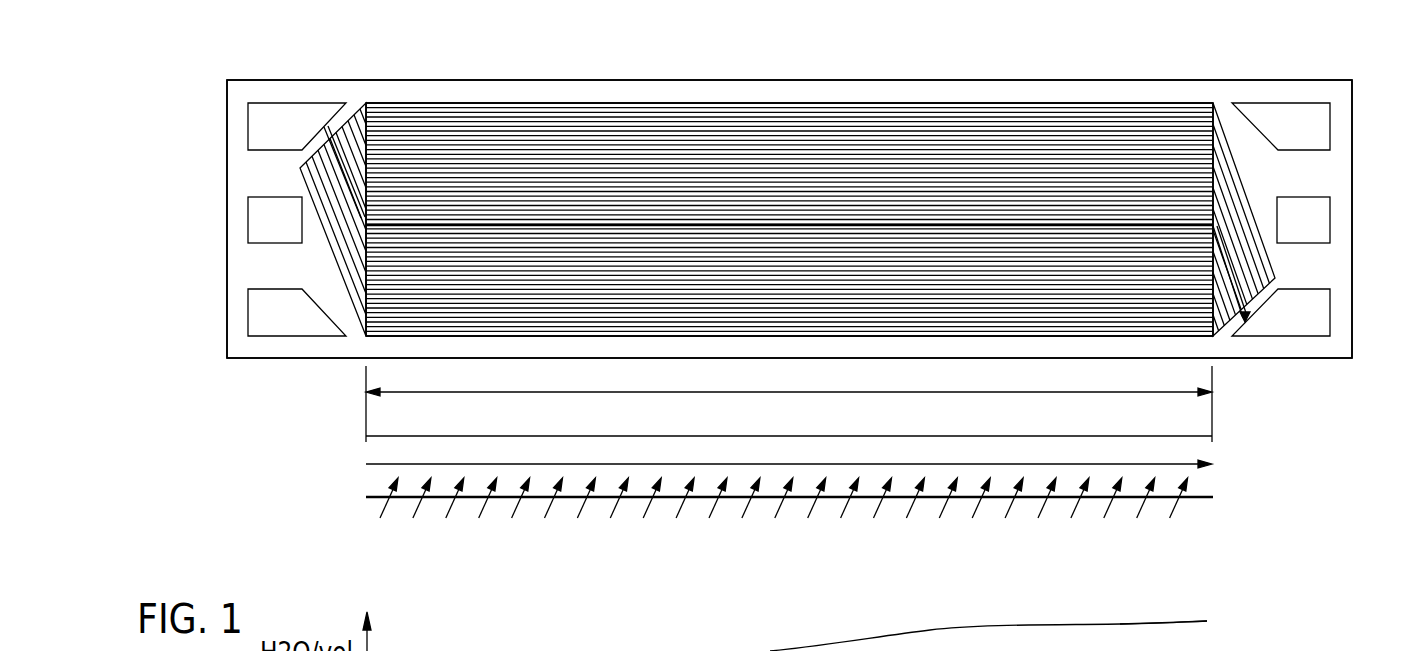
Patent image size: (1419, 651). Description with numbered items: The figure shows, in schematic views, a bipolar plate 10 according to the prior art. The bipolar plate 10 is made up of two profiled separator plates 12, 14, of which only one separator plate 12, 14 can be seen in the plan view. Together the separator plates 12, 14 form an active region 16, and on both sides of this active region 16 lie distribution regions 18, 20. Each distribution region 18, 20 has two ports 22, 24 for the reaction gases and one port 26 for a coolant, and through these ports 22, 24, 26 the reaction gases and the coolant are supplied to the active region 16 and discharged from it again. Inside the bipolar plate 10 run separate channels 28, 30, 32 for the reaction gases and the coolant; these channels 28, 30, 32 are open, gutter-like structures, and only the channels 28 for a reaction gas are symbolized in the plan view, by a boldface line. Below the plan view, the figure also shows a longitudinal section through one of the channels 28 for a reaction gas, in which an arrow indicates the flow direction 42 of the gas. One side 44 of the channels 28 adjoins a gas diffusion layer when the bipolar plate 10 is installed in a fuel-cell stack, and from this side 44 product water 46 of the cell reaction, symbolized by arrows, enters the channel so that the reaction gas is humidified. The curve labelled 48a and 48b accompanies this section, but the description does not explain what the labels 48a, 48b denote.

The bipolar plate 10 is at (877, 52).
The separator plate 12 is at (1150, 81).
The separator plate 14 is at (1150, 81).
The active region 16 is at (538, 82).
The distribution region 18 is at (300, 92).
The distribution region 20 is at (1283, 90).
The port for reaction gas 22 is at (266, 127).
The port for reaction gas 24 is at (266, 313).
The port for coolant 26 is at (266, 221).
The channel for reaction gas 28 is at (990, 232).
The channel 30 is at (722, 104).
The channel 32 is at (722, 104).
The flow direction 42 is at (943, 464).
The side of the channels 44 is at (499, 528).
The product water 46 is at (386, 508).
The water content curve 48a is at (1003, 636).
The water content curve 48b is at (1171, 623).